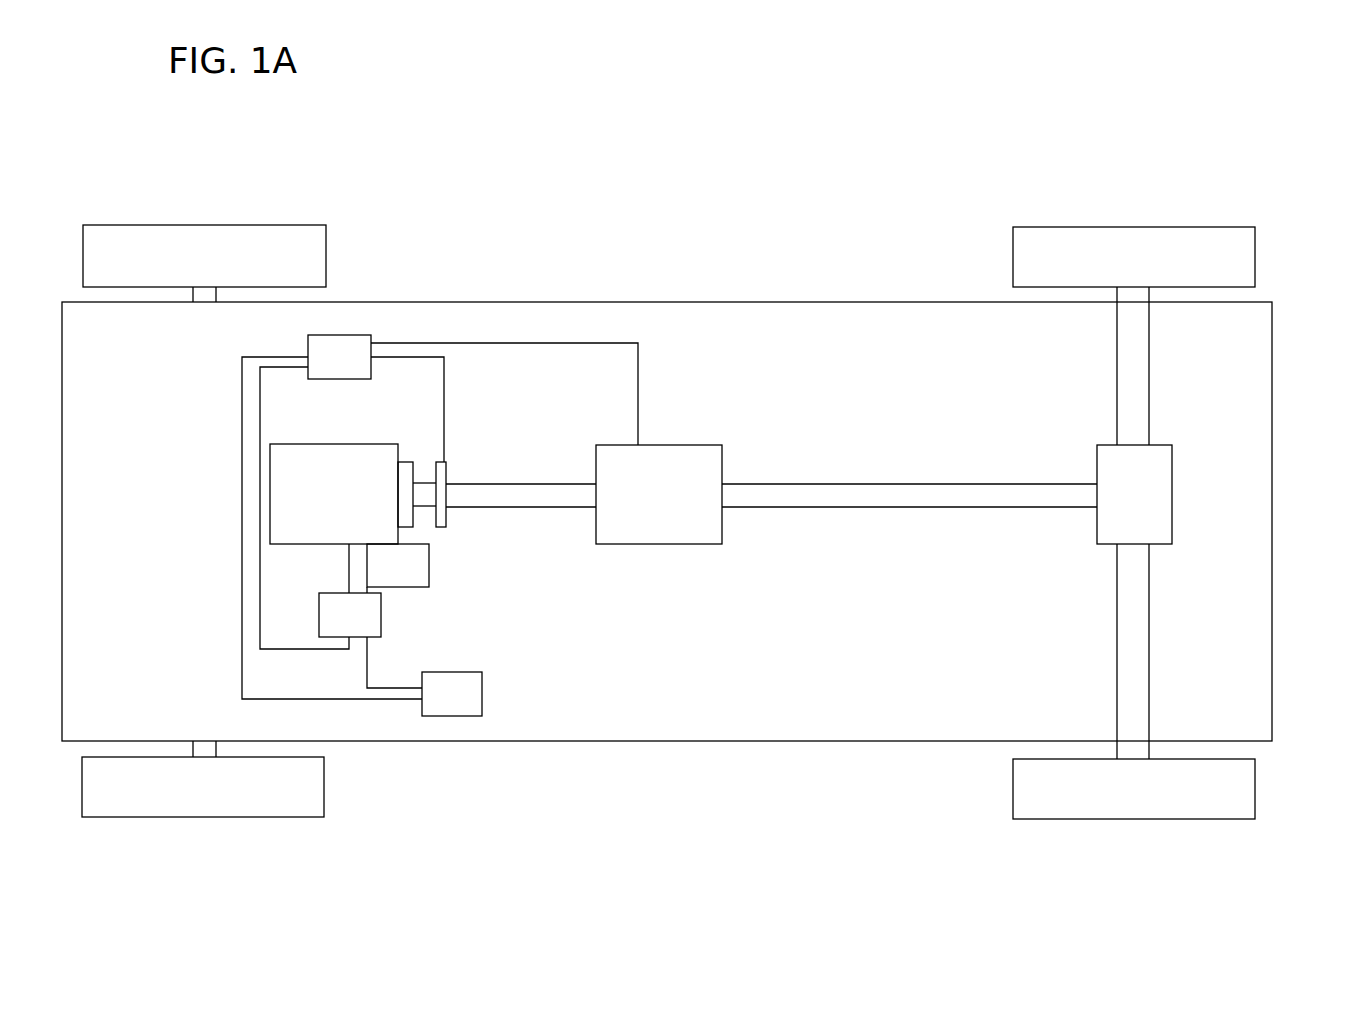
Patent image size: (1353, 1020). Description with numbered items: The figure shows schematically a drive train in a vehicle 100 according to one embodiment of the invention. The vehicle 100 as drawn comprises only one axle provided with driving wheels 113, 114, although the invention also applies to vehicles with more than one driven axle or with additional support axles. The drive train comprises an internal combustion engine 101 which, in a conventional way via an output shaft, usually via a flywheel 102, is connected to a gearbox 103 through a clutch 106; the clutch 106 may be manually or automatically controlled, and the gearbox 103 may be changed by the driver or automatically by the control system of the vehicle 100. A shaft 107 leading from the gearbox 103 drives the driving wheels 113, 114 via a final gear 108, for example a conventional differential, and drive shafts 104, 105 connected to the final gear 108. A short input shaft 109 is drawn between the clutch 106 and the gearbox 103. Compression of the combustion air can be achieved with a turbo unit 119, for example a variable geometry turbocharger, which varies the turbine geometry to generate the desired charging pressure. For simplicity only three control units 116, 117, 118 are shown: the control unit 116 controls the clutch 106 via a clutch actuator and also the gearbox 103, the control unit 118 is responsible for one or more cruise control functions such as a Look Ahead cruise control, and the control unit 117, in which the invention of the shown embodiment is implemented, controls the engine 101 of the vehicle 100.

The vehicle 100 is at (574, 111).
The internal combustion engine 101 is at (305, 532).
The flywheel 102 is at (403, 478).
The gearbox 103 is at (661, 455).
The drive shaft 104 is at (1138, 365).
The drive shaft 105 is at (1143, 661).
The clutch 106 is at (438, 535).
The shaft 107 is at (1007, 500).
The final gear 108 is at (1166, 491).
The input shaft 109 is at (566, 500).
The driving wheel 113 is at (1250, 250).
The driving wheel 114 is at (1247, 792).
The control unit 116 is at (322, 374).
The control unit 117 is at (370, 616).
The control unit 118 is at (462, 691).
The turbo unit 119 is at (413, 586).